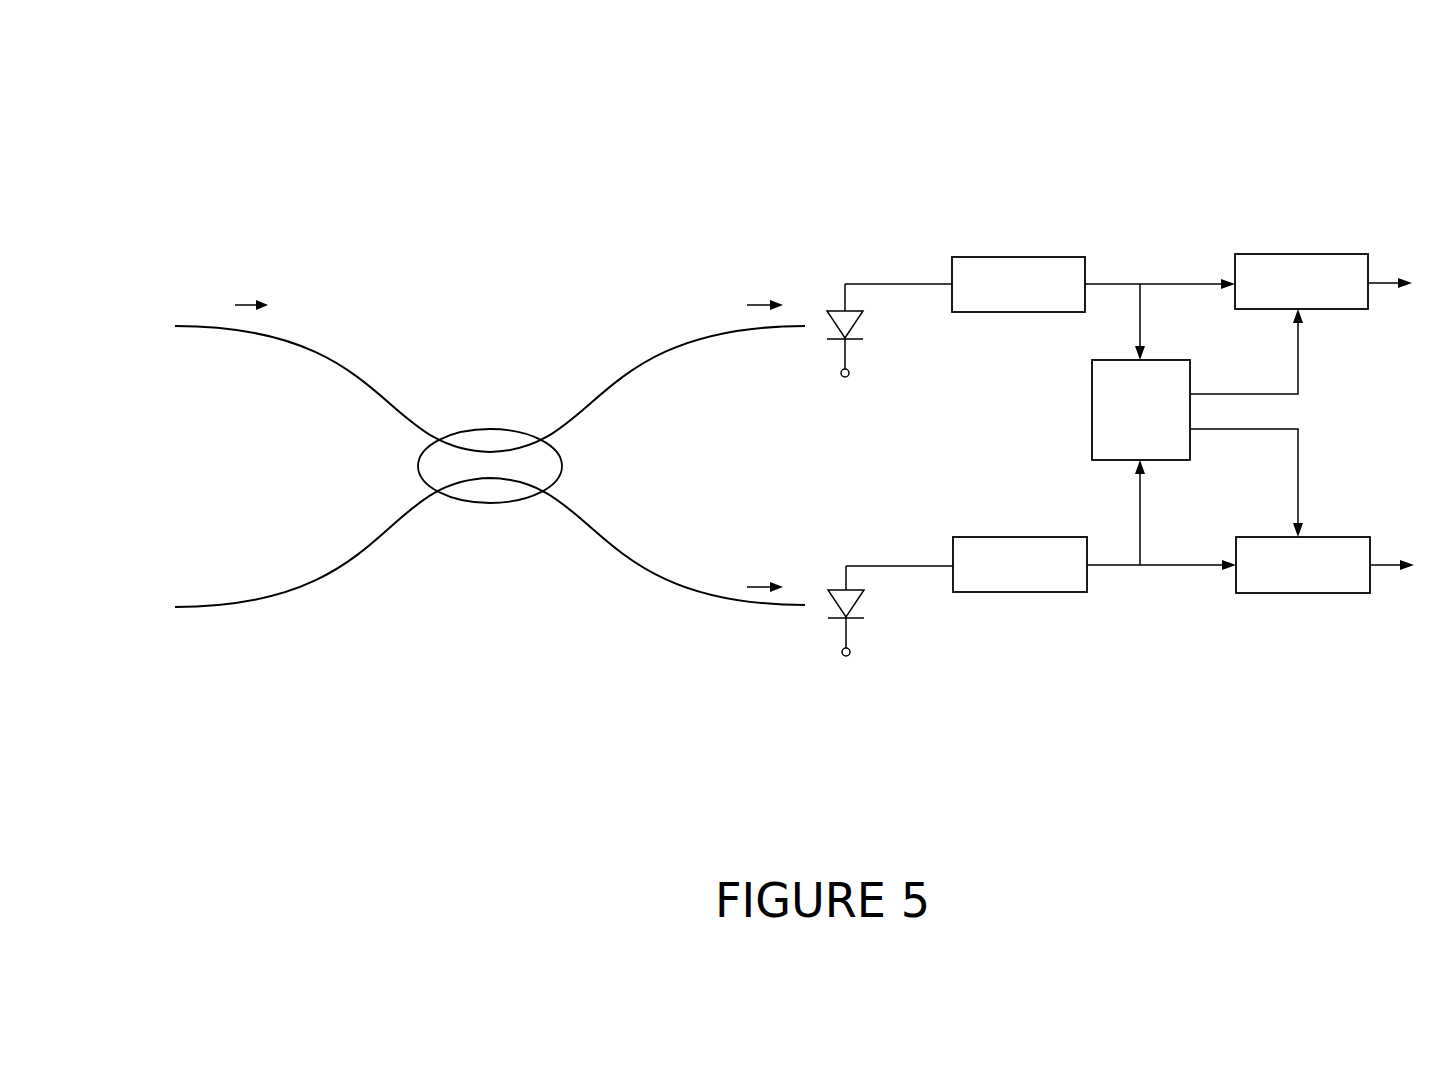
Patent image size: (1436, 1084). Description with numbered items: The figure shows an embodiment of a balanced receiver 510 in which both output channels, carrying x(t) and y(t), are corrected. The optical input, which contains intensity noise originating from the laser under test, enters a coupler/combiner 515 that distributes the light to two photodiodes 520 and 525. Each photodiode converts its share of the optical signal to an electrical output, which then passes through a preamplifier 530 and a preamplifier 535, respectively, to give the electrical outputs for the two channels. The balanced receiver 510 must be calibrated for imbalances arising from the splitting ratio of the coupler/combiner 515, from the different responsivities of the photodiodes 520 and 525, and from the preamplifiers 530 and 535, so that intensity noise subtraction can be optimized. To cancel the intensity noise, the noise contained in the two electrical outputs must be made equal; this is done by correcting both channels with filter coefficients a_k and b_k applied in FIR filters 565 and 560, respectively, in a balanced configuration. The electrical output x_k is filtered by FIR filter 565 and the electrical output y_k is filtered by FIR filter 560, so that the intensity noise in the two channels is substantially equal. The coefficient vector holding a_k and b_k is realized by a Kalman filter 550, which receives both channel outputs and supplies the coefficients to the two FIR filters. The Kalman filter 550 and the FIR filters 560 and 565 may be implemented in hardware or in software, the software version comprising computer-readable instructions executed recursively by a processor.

The balanced receiver 510 is at (758, 192).
The coupler/combiner 515 is at (495, 438).
The photodiode 520 is at (858, 320).
The photodiode 525 is at (860, 600).
The preamplifier 530 is at (1022, 268).
The preamplifier 535 is at (1018, 546).
The Kalman filter 550 is at (1184, 375).
The FIR filter 560 is at (1346, 584).
The FIR filter 565 is at (1330, 264).